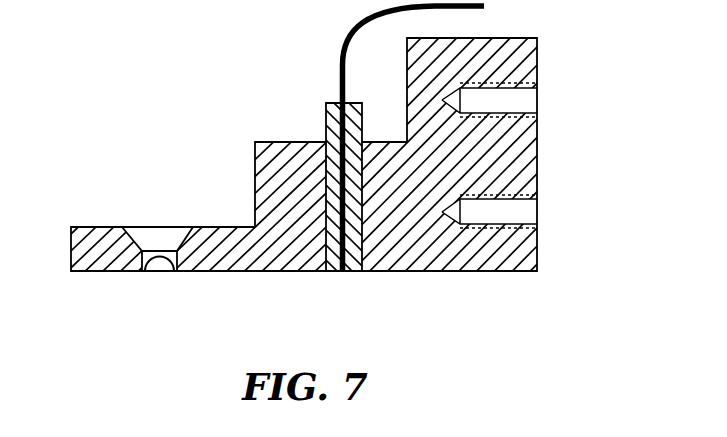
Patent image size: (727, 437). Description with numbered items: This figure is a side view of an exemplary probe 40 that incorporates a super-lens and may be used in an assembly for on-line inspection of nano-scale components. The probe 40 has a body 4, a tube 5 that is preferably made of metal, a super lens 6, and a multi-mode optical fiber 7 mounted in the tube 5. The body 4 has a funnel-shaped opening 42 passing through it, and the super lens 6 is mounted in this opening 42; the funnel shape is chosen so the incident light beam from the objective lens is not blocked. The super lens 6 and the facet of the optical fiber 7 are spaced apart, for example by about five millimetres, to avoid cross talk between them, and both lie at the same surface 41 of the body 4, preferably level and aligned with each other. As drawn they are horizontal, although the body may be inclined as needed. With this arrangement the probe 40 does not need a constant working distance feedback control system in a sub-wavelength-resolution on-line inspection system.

The probe 40 is at (557, 92).
The body 4 is at (438, 272).
The surface 41 is at (291, 272).
The funnel-shaped opening 42 is at (158, 227).
The super lens 6 is at (159, 272).
The tube 5 is at (369, 272).
The multi-mode optical fiber 7 is at (342, 60).